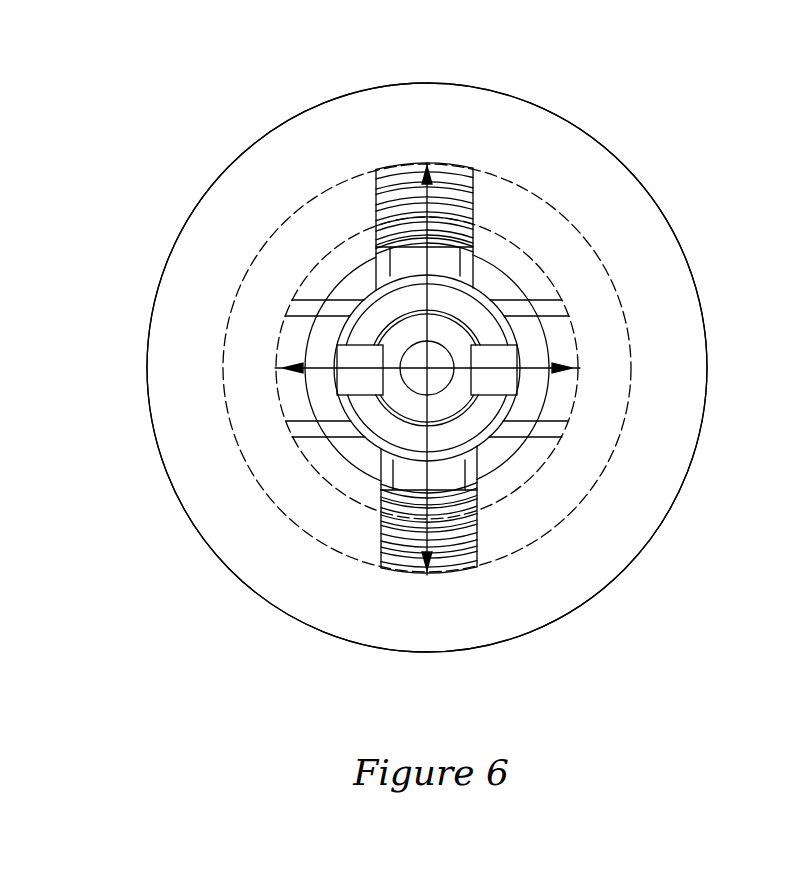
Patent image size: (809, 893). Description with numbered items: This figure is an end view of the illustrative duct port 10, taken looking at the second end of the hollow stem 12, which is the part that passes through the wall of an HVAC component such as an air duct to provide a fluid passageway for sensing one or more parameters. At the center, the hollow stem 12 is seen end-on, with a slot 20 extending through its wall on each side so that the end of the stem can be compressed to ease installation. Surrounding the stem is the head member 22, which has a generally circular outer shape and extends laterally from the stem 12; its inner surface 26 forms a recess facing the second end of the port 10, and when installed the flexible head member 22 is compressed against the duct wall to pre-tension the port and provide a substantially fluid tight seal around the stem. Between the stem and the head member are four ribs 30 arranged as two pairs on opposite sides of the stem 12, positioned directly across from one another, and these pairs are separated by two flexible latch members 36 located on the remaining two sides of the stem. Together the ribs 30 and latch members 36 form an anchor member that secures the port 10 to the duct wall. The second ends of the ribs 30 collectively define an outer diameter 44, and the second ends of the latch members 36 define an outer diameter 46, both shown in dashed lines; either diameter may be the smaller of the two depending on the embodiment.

The port 10 is at (180, 88).
The hollow stem 12 is at (513, 332).
The slot 20 is at (343, 357).
The head member 22 is at (667, 212).
The inner surface 26 is at (683, 376).
The ribs 30 is at (297, 313).
The flexible latch members 36 is at (468, 257).
The outer diameter of the ribs 44 is at (427, 423).
The outer diameter of the latch members 46 is at (424, 369).